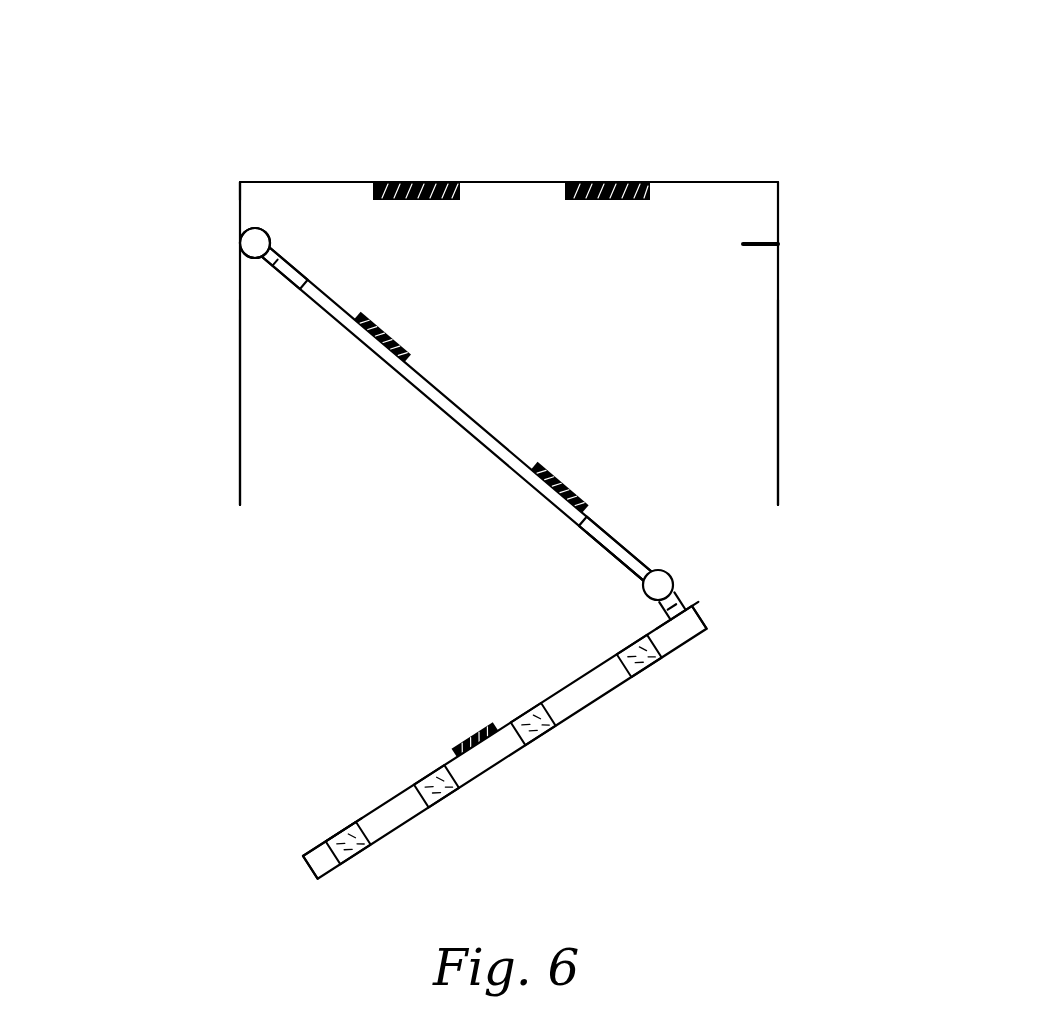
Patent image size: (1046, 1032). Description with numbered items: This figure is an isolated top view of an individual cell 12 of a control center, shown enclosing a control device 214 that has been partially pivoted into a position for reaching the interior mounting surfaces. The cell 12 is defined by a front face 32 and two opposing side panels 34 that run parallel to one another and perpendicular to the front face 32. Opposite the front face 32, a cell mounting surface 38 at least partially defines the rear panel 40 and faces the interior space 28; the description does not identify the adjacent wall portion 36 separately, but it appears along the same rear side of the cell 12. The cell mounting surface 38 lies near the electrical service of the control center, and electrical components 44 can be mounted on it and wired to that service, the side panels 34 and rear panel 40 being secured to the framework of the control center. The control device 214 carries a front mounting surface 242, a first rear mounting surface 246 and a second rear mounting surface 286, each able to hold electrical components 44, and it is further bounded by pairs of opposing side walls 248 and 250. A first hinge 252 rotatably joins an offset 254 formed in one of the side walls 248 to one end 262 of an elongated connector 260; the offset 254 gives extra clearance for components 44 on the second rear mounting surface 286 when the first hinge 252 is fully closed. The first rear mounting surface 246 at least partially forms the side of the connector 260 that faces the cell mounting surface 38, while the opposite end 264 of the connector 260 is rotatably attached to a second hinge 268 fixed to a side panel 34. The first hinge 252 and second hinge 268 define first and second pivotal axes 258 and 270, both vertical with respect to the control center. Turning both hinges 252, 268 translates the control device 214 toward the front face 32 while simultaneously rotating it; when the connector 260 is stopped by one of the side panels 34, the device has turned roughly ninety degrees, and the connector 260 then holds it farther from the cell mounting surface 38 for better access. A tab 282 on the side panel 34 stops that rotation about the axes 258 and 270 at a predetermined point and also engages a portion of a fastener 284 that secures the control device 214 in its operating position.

The cell 12 is at (778, 196).
The interior space 28 is at (675, 225).
The front face 32 is at (314, 219).
The side panels 34 is at (778, 336).
The top wall 36 is at (496, 181).
The cell mounting surface 38 is at (257, 183).
The rear panel 40 is at (672, 181).
The electrical components 44 is at (412, 181).
The control device 214 is at (498, 753).
The front mounting surface 242 is at (390, 820).
The first rear mounting surface 246 is at (593, 512).
The side wall 248 is at (305, 862).
The side wall 250 is at (706, 622).
The first hinge 252 is at (673, 580).
The offset 254 is at (690, 598).
The first pivotal axis 258 is at (643, 594).
The elongated connector 260 is at (450, 422).
The end of connector 262 is at (603, 552).
The opposite end of connector 264 is at (273, 268).
The second hinge 268 is at (240, 246).
The second pivotal axis 270 is at (240, 243).
The tab 282 is at (778, 244).
The fastener 284 is at (703, 627).
The second rear mounting surface 286 is at (333, 830).